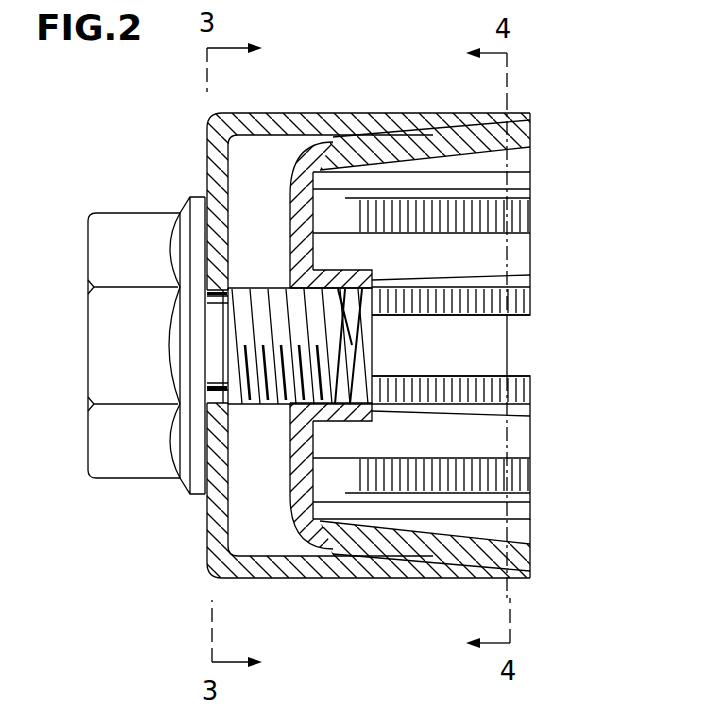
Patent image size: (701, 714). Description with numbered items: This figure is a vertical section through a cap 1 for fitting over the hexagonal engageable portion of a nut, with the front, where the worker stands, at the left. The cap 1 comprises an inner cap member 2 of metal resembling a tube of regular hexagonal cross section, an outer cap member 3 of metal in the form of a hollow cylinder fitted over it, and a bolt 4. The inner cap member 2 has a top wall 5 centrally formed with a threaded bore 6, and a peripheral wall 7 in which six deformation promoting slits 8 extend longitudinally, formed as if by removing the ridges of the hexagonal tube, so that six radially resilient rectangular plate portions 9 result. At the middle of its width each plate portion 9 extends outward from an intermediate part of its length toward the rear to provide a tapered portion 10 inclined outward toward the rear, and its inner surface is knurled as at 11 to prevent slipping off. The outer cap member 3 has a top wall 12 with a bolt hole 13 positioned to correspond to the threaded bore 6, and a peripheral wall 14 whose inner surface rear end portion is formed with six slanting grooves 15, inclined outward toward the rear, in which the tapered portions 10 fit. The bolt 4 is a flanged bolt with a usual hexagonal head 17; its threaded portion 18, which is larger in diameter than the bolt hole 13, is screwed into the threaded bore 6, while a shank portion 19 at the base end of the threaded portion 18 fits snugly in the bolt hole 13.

The cap 1 is at (594, 138).
The inner cap member 2 is at (357, 345).
The outer cap member 3 is at (208, 548).
The bolt 4 is at (110, 351).
The top wall 5 is at (297, 200).
The threaded bore 6 is at (375, 335).
The peripheral wall 7 is at (304, 301).
The deformation promoting slits 8 is at (512, 318).
The rectangular plate portions 9 is at (471, 345).
The tapered portion 10 is at (522, 128).
The knurled portion 11 is at (528, 302).
The top wall 12 is at (212, 163).
The bolt hole 13 is at (218, 306).
The peripheral wall 14 is at (291, 130).
The slanting grooves 15 is at (446, 132).
The hexagonal head 17 is at (100, 318).
The threaded portion 18 is at (275, 410).
The shank portion 19 is at (212, 372).